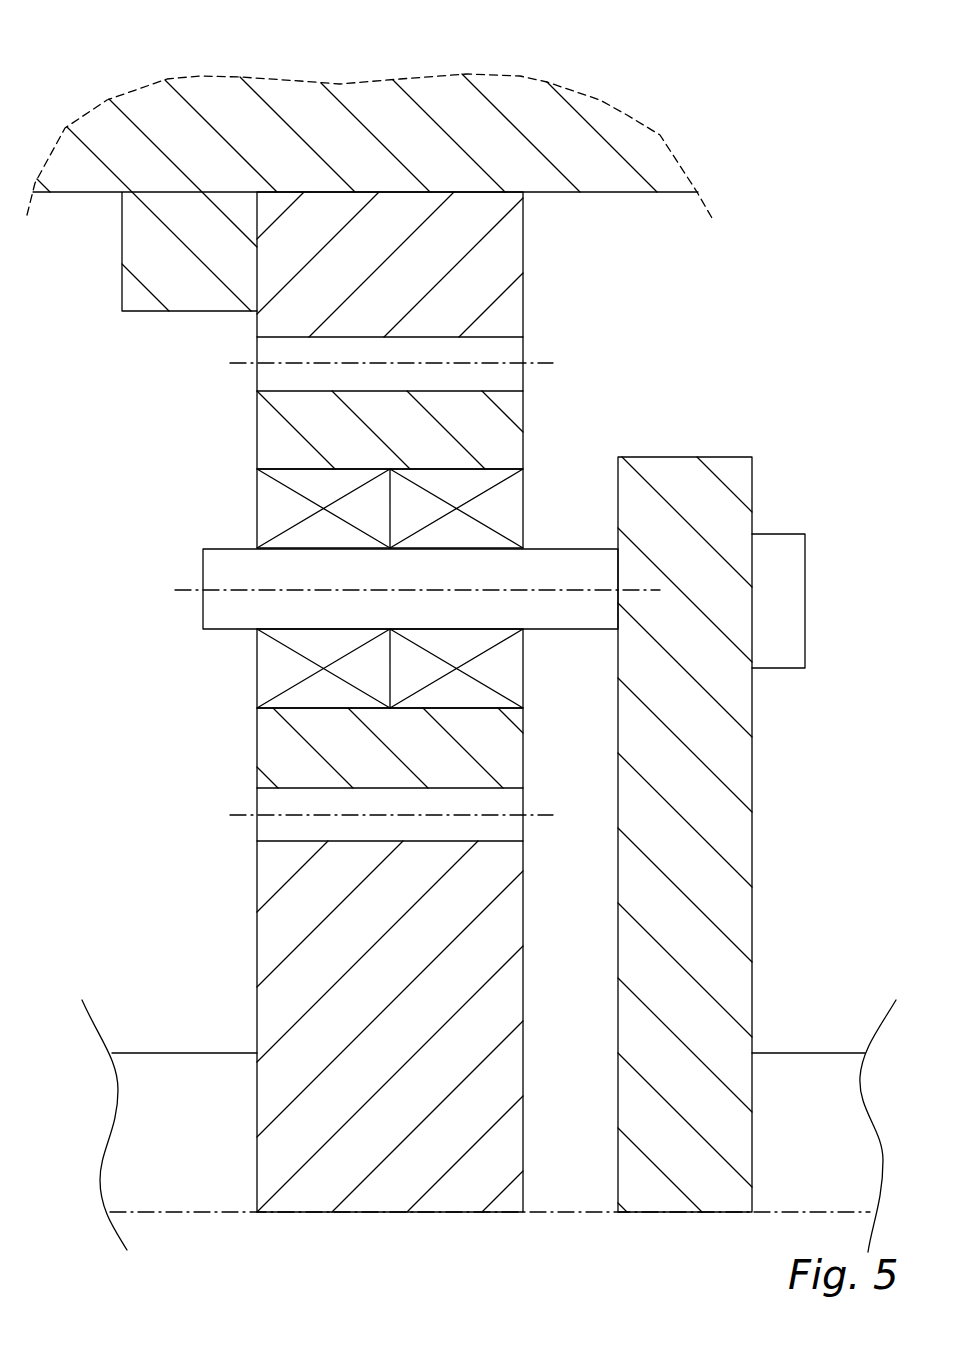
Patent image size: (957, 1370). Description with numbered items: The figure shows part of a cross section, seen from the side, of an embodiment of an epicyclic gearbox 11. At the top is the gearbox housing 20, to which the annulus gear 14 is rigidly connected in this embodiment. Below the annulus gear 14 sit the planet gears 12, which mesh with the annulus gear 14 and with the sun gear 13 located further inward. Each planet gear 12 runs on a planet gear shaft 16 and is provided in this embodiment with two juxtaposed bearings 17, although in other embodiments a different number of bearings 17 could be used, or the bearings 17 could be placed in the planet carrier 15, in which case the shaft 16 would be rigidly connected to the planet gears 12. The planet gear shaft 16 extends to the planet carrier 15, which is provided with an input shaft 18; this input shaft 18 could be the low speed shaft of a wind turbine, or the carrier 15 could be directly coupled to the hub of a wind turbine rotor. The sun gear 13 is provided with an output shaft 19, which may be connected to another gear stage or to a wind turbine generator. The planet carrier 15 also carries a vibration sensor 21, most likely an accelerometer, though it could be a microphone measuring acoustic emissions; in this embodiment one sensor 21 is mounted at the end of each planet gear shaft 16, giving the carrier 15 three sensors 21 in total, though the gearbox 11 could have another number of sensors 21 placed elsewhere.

The epicyclic gearbox 11 is at (775, 132).
The planet gear 12 is at (315, 423).
The sun gear 13 is at (297, 925).
The annulus gear 14 is at (487, 277).
The planet carrier 15 is at (703, 810).
The planet gear shaft 16 is at (263, 605).
The bearing 17 is at (283, 505).
The input shaft 18 is at (789, 1103).
The output shaft 19 is at (180, 1108).
The gearbox housing 20 is at (175, 152).
The vibration sensor 21 is at (775, 613).